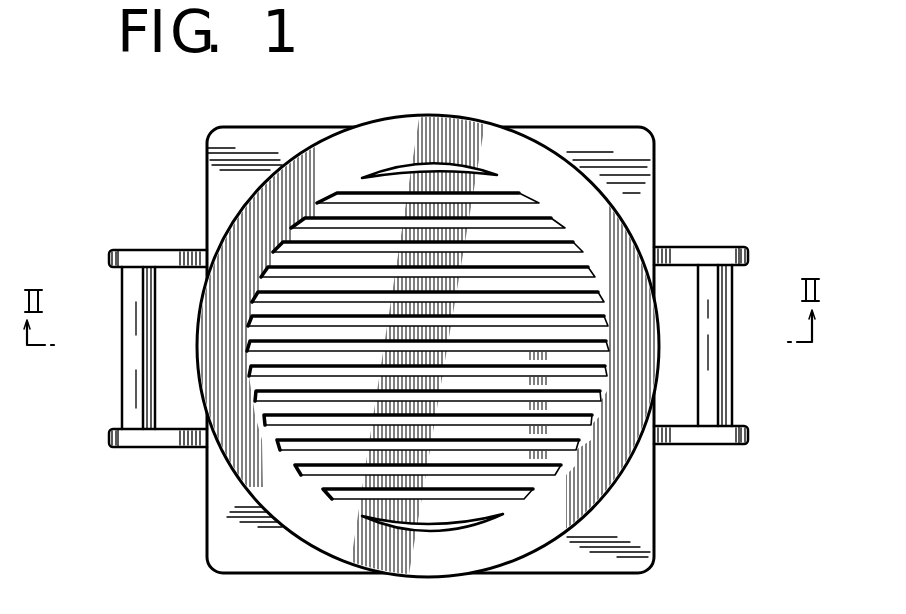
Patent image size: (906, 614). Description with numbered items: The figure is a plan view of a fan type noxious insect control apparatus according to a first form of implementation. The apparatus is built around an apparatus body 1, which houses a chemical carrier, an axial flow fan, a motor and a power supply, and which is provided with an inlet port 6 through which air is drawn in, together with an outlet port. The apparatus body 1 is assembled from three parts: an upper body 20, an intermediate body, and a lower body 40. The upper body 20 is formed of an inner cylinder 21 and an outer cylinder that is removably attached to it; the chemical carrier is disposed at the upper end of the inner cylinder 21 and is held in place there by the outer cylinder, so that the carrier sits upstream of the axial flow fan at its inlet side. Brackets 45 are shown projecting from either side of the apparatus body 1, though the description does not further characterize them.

The apparatus body 1 is at (603, 120).
The inlet port 6 is at (442, 223).
The upper body 20 is at (625, 478).
The inner cylinder 21 is at (363, 152).
The lower body 40 is at (630, 150).
The mounting bracket 45 is at (128, 377).